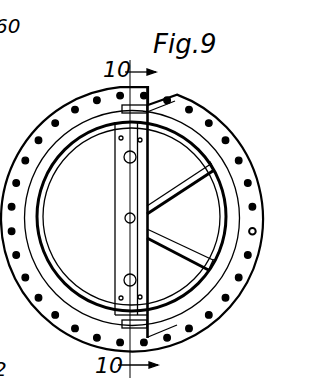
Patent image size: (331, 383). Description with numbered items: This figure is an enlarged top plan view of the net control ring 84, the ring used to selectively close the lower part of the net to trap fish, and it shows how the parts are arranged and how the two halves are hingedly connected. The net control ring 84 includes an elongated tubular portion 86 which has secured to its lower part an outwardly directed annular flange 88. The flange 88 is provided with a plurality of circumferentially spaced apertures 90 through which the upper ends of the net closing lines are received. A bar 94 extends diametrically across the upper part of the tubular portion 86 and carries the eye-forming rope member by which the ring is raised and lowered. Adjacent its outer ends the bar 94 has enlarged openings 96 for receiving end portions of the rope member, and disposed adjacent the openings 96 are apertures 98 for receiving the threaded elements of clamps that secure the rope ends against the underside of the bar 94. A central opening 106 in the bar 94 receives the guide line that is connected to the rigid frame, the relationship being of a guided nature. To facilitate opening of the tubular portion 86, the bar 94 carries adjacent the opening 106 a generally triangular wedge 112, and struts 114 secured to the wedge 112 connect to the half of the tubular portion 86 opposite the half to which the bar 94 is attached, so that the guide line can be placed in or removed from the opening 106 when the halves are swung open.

The net control ring 84 is at (221, 115).
The tubular portion 86 is at (26, 221).
The annular flange 88 is at (235, 288).
The apertures 90 is at (252, 233).
The bar 94 is at (119, 184).
The enlarged openings 96 is at (124, 160).
The apertures 98 is at (118, 139).
The central opening 106 is at (125, 221).
The triangular wedge 112 is at (141, 214).
The struts 114 is at (193, 191).